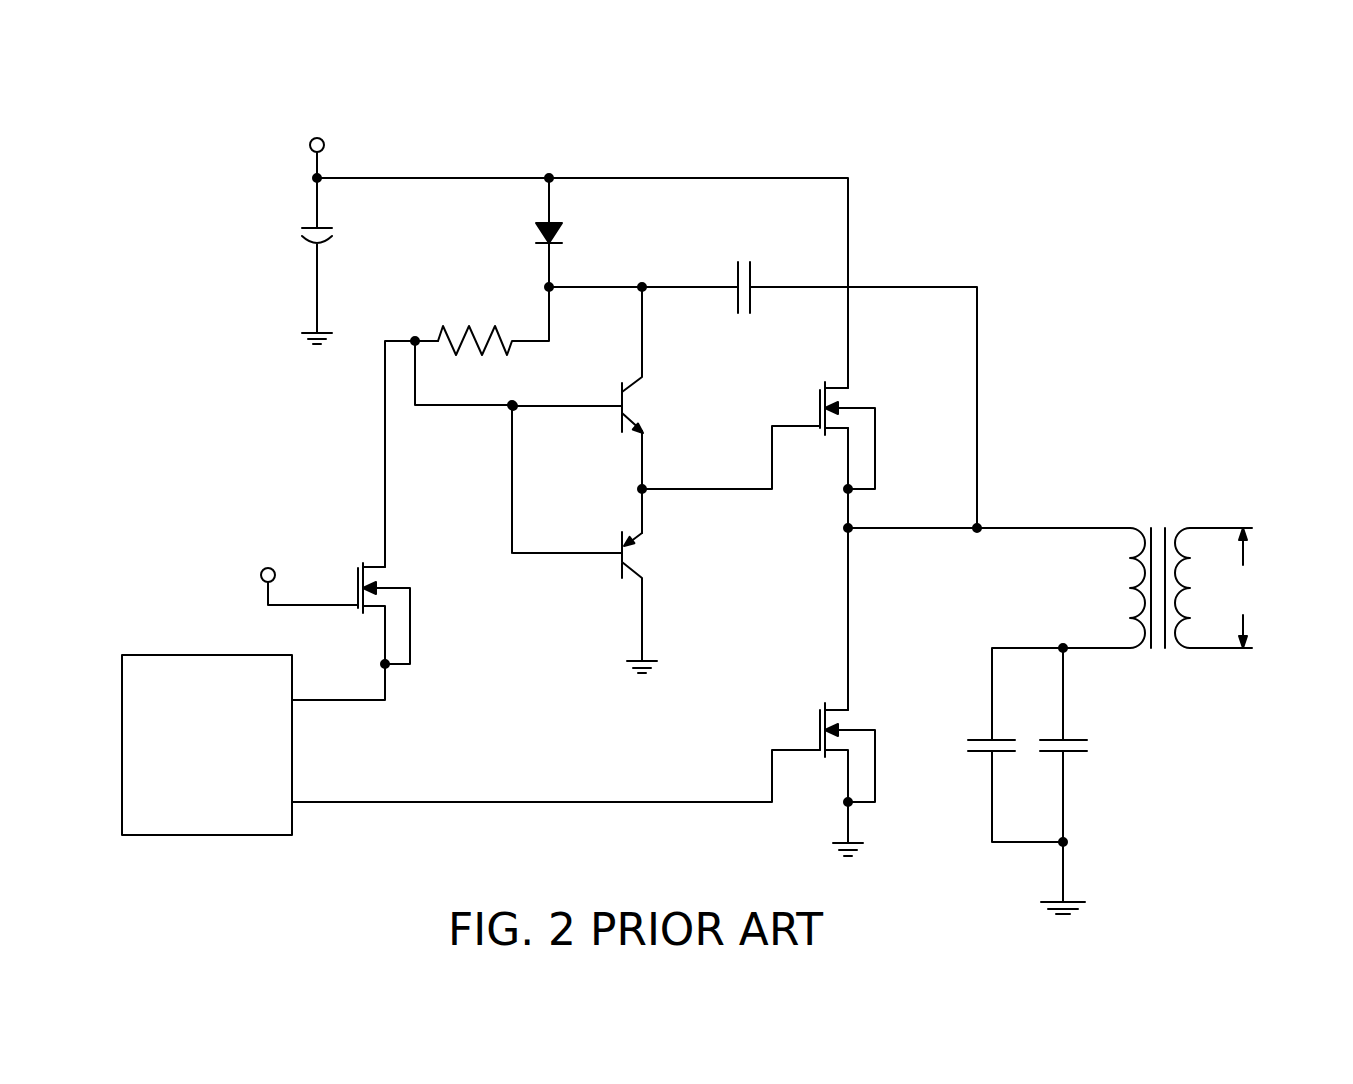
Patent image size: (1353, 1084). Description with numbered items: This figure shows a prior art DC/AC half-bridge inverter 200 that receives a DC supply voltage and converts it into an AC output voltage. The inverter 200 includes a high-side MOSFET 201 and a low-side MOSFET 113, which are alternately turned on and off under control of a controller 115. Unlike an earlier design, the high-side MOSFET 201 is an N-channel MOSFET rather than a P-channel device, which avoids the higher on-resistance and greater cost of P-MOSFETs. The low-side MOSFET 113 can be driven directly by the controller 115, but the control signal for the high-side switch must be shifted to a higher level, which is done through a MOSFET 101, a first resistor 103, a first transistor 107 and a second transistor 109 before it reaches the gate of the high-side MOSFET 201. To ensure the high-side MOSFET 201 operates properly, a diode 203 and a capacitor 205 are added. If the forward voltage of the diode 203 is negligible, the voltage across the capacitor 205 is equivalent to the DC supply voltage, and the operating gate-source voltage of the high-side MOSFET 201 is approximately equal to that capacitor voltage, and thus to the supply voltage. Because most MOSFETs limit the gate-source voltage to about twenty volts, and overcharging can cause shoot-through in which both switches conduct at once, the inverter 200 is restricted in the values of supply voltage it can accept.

The half-bridge inverter 200 is at (912, 104).
The diode 203 is at (538, 237).
The capacitor 205 is at (752, 272).
The first resistor 103 is at (442, 330).
The first transistor 107 is at (620, 396).
The second transistor 109 is at (620, 544).
The high-side MOSFET 201 is at (818, 402).
The low-side MOSFET 113 is at (818, 724).
The MOSFET 101 is at (358, 578).
The controller 115 is at (165, 655).